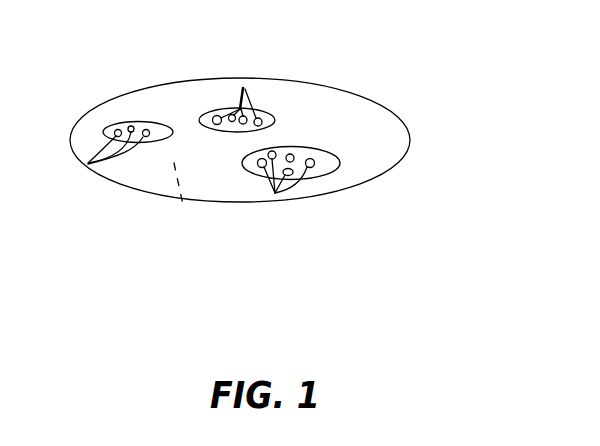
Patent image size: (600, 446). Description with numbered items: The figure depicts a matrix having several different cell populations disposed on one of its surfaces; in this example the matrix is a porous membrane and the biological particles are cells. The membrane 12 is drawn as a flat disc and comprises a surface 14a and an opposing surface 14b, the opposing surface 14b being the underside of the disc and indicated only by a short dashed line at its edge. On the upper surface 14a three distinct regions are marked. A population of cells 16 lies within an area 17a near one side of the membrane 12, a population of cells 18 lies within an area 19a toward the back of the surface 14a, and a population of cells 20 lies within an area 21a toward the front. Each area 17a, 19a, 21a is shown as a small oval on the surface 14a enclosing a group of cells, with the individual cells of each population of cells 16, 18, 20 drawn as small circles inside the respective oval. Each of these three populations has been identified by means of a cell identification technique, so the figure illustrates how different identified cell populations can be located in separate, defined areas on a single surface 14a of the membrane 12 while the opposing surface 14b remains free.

The membrane 12 is at (262, 145).
The surface 14a is at (303, 100).
The opposing surface 14b is at (183, 202).
The population of cells 16 is at (87, 164).
The area 17a is at (165, 125).
The population of cells 18 is at (243, 88).
The area 19a is at (214, 108).
The population of cells 20 is at (275, 193).
The area 21a is at (327, 165).